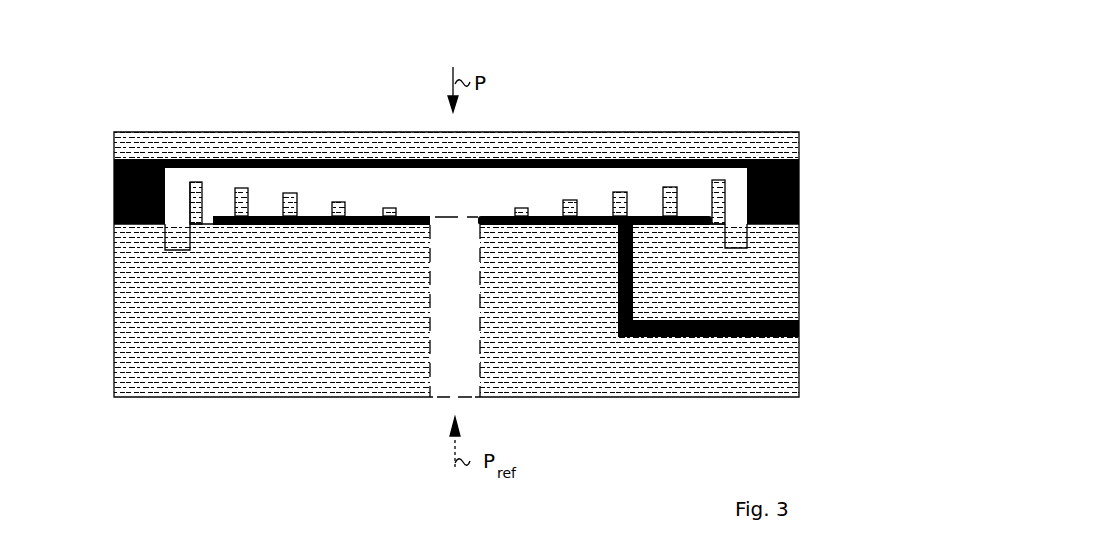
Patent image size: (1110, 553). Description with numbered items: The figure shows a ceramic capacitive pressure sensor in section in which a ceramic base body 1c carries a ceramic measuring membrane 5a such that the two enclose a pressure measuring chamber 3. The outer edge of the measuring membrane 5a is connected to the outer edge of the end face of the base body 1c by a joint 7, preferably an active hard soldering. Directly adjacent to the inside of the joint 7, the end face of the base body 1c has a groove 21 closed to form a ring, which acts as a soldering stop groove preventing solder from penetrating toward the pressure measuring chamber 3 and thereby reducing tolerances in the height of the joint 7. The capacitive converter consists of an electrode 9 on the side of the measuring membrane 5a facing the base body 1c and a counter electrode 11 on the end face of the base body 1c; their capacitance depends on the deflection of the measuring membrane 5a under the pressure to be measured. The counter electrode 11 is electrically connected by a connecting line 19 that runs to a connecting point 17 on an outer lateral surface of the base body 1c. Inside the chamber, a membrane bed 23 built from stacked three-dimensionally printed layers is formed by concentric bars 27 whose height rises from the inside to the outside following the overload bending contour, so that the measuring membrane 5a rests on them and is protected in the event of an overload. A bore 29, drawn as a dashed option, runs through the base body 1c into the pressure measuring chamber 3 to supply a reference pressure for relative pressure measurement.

The measuring membrane 5a is at (205, 147).
The electrode 9 is at (290, 165).
The membrane bed 23 is at (331, 183).
The joint 7 is at (114, 190).
The groove 21 is at (172, 235).
The pressure measuring chamber 3 is at (481, 206).
The base body 1c is at (122, 332).
The counter electrode 11 is at (313, 225).
The bars 27 is at (203, 186).
The bore 29 is at (466, 316).
The connecting point 17 is at (799, 333).
The connecting line 19 is at (648, 337).